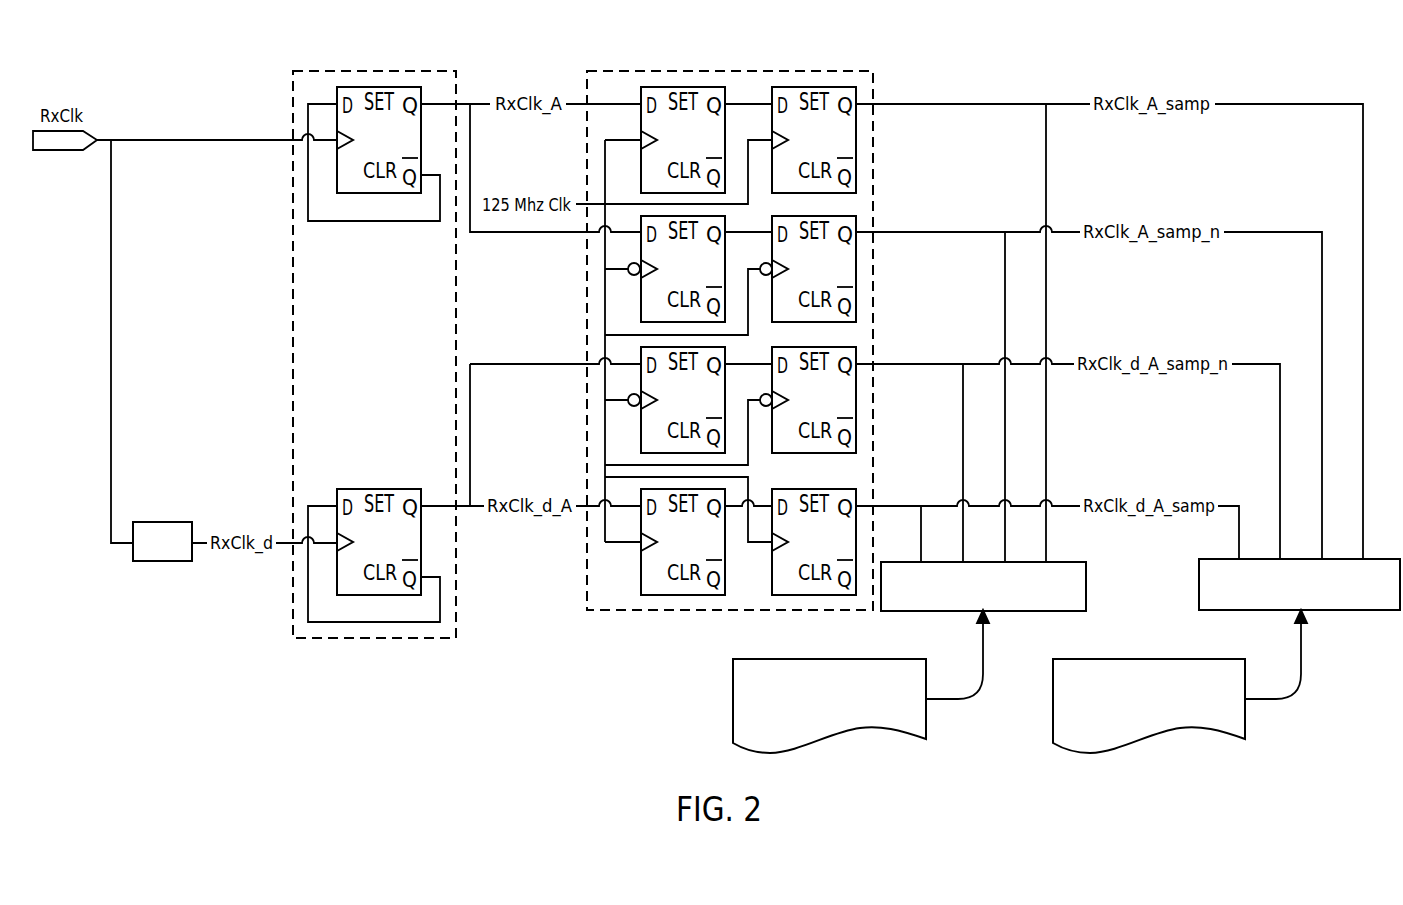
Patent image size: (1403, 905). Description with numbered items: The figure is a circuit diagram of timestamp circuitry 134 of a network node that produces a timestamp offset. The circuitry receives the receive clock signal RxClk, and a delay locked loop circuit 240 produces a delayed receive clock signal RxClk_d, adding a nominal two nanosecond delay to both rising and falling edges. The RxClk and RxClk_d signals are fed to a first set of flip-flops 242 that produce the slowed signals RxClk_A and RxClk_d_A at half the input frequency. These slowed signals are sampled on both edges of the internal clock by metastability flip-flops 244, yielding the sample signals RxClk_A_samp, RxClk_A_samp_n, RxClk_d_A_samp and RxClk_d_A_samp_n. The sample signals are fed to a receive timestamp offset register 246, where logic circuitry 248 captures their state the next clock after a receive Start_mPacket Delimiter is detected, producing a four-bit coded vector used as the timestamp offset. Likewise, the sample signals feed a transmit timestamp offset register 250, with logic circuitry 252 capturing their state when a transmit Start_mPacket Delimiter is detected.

The timestamp circuitry 134 is at (1309, 63).
The delay locked loop circuit 240 is at (164, 562).
The first set of flip-flops 242 is at (376, 71).
The metastability flip-flops 244 is at (730, 71).
The receive timestamp offset register 246 is at (1023, 612).
The logic circuitry 248 is at (832, 659).
The transmit timestamp offset register 250 is at (1344, 611).
The logic circuitry 252 is at (1152, 659).